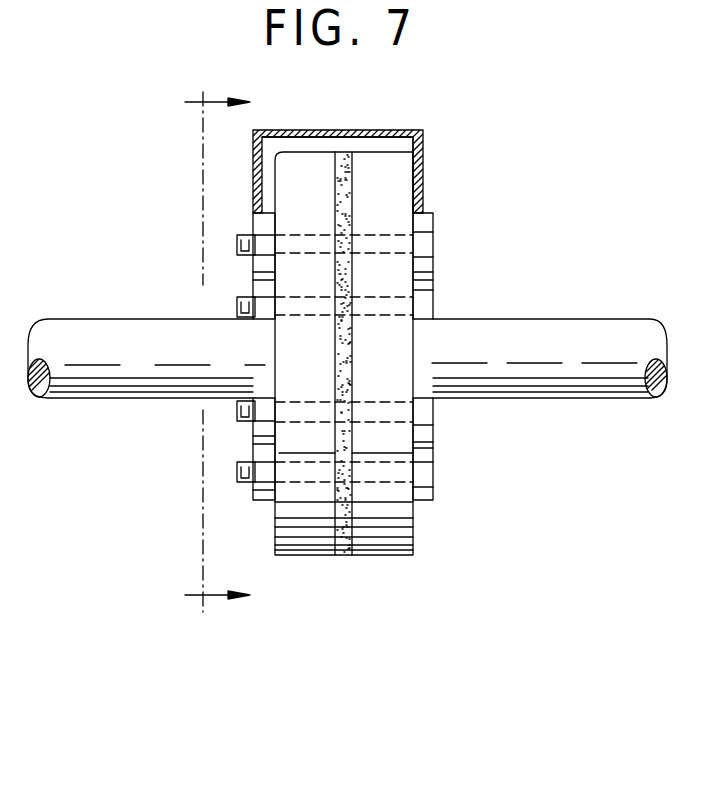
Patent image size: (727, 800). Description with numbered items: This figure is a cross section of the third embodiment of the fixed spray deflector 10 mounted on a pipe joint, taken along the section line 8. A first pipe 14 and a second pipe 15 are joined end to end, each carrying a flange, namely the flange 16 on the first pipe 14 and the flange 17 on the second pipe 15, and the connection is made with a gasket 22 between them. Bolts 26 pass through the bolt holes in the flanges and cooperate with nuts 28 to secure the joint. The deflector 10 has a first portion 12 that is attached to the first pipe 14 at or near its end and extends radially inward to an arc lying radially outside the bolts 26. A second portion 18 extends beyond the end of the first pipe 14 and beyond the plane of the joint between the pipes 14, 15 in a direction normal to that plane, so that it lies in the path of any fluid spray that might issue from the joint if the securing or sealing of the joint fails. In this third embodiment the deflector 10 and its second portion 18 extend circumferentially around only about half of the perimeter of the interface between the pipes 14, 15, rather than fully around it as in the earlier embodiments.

The section line 8 is at (232, 347).
The fixed spray deflector 10 is at (421, 128).
The first portion 12 is at (425, 152).
The pipe 14 is at (570, 320).
The pipe 15 is at (100, 325).
The flange 16 is at (407, 347).
The flange 17 is at (278, 334).
The second portion 18 is at (340, 129).
The gasket 22 is at (343, 556).
The bolts 26 is at (428, 303).
The nuts 28 is at (265, 495).